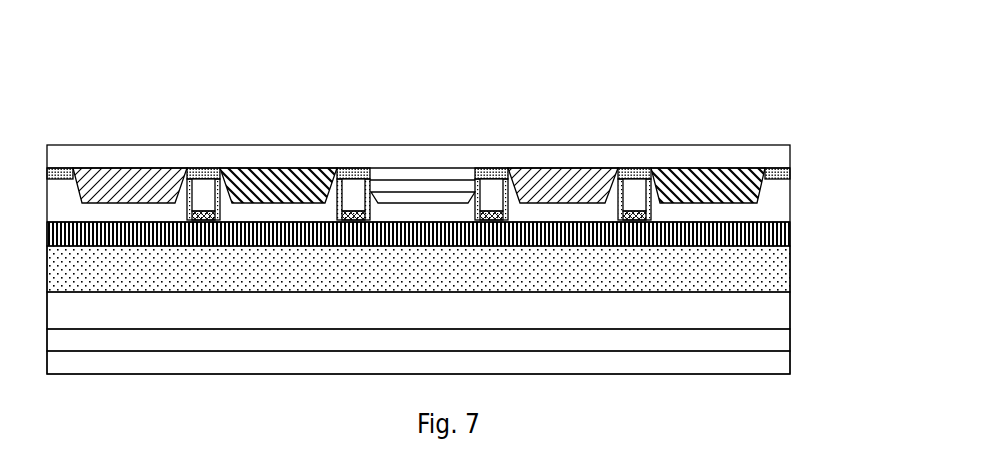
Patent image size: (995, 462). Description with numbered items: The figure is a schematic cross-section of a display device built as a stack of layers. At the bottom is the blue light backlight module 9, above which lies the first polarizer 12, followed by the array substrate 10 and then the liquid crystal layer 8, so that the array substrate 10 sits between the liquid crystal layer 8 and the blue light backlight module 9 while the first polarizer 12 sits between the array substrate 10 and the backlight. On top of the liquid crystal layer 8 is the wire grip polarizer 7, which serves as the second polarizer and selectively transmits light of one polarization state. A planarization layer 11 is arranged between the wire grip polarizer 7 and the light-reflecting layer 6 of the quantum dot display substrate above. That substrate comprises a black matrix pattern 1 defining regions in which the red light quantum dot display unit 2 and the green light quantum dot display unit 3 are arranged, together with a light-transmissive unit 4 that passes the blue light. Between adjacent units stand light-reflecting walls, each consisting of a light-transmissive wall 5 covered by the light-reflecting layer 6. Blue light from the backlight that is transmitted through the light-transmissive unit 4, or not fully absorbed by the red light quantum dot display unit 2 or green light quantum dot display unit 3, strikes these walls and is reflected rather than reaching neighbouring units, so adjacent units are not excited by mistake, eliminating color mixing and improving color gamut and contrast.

The black matrix pattern 1 is at (60, 173).
The red light quantum dot display unit 2 is at (137, 173).
The green light quantum dot display unit 3 is at (253, 168).
The light-transmissive unit 4 is at (413, 168).
The light-transmissive wall 5 is at (357, 192).
The light-reflecting layer 6 is at (492, 207).
The wire grip polarizer 7 is at (778, 234).
The liquid crystal layer 8 is at (778, 277).
The blue light backlight module 9 is at (778, 363).
The array substrate 10 is at (778, 309).
The planarization layer 11 is at (778, 204).
The first polarizer 12 is at (778, 341).